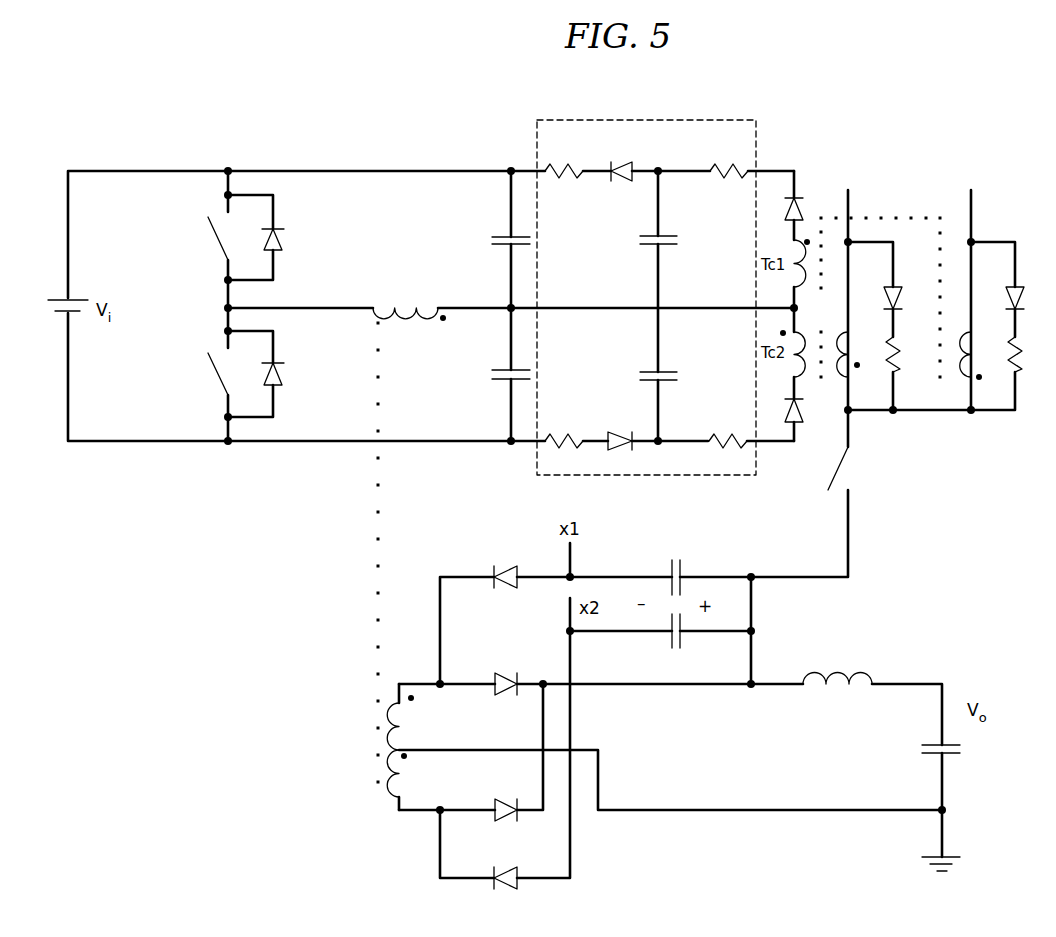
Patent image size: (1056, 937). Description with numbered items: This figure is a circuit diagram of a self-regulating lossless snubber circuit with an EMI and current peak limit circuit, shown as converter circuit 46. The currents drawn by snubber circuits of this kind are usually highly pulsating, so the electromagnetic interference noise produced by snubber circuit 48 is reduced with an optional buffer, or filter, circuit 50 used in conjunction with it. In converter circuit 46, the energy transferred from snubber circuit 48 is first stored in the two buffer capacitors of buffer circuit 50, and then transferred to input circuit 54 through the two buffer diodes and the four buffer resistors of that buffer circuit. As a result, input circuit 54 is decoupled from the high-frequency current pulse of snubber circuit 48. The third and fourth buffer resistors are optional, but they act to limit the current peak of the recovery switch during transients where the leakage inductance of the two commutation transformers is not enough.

The converter circuit 46 is at (167, 592).
The snubber circuit 48 is at (959, 486).
The buffer circuit 50 is at (537, 462).
The input circuit 54 is at (289, 132).